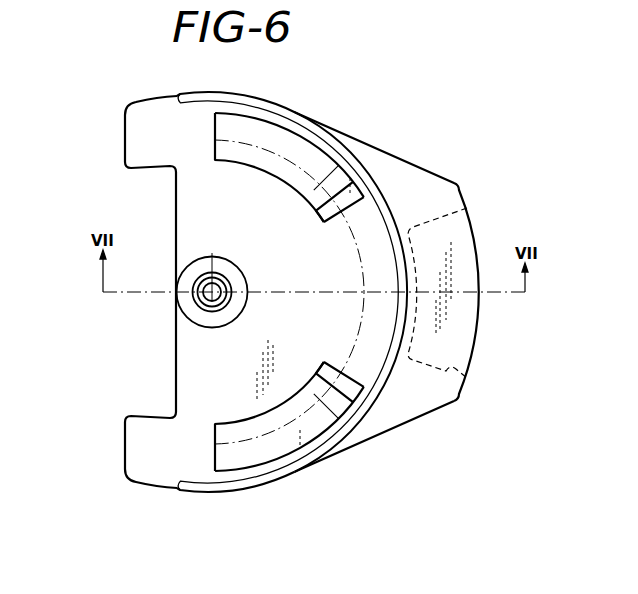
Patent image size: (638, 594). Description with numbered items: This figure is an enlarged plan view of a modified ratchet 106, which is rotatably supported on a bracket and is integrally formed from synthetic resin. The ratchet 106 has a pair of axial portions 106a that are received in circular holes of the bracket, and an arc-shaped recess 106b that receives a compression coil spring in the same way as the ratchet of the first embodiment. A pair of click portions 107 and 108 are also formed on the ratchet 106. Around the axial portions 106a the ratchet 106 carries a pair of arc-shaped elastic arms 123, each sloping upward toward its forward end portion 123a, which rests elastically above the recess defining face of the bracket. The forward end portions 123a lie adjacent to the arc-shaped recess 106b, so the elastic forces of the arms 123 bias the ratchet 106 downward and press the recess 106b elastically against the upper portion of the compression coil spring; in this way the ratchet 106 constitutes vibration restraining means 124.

The ratchet 106 is at (367, 144).
The axial portions 106a is at (210, 282).
The arc-shaped recess 106b is at (462, 382).
The click portion 107 is at (125, 141).
The click portion 108 is at (126, 418).
The arc-shaped elastic arms 123 is at (306, 183).
The forward end portion 123a is at (321, 212).
The vibration restraining means 124 is at (390, 431).